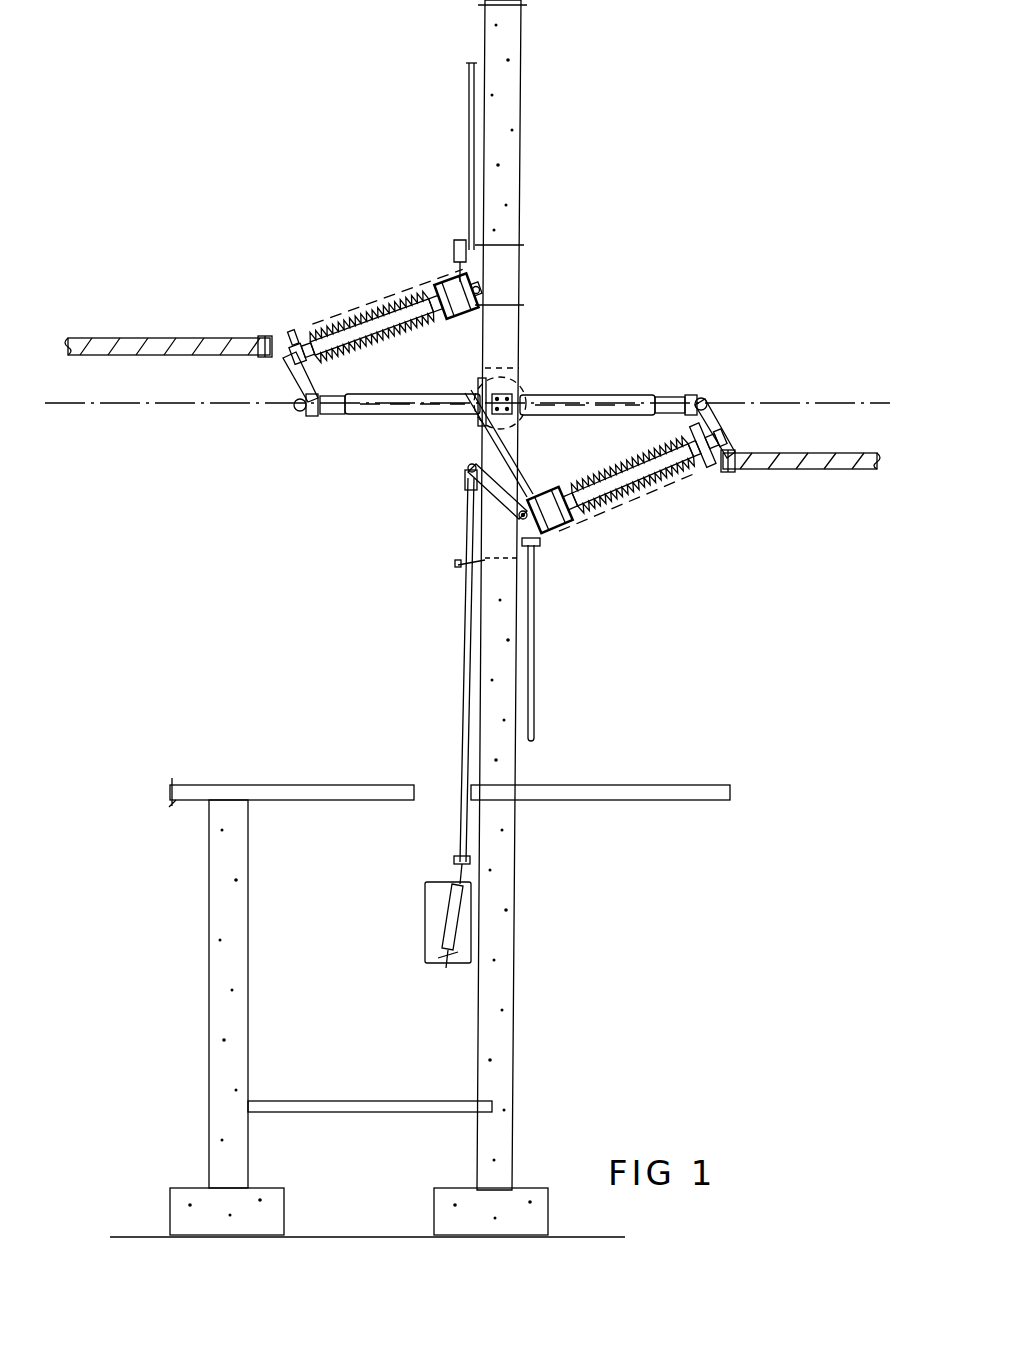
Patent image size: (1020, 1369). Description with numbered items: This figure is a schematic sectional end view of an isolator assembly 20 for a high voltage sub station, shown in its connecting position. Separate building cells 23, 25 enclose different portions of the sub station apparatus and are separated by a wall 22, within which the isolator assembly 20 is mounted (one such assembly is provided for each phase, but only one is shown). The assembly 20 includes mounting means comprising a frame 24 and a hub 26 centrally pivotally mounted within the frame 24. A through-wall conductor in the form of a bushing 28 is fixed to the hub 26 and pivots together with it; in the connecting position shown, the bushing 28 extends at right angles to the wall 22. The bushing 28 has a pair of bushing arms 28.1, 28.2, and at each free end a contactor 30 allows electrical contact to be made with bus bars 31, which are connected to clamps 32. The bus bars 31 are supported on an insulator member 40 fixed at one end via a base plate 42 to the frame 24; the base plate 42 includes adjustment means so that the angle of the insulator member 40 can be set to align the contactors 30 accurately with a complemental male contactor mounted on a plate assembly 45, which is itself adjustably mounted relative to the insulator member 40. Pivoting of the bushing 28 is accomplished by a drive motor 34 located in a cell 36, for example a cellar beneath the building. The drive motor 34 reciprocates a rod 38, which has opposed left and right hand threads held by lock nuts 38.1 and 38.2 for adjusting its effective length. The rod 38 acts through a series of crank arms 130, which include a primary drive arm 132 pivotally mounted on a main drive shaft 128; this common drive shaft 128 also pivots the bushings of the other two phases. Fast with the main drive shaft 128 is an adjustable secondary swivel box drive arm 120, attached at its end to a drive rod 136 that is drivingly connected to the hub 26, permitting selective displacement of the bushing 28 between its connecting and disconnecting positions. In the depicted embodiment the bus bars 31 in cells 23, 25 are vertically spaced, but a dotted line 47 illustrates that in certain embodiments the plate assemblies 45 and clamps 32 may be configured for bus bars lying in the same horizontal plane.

The isolator assembly 20 is at (226, 242).
The wall 22 is at (506, 190).
The building cell 23 is at (208, 47).
The frame 24 is at (508, 282).
The building cell 25 is at (710, 60).
The hub 26 is at (532, 385).
The bushing 28 is at (501, 437).
The bushing arm 28.1 is at (441, 412).
The bushing arm 28.2 is at (592, 416).
The contactor 30 is at (308, 425).
The bus bar 31 is at (178, 340).
The clamp 32 is at (276, 342).
The drive motor 34 is at (437, 913).
The cell 36 is at (400, 1042).
The rod 38 is at (418, 677).
The lock nut 38.1 is at (454, 860).
The lock nut 38.2 is at (458, 527).
The insulator member 40 is at (389, 272).
The base plate 42 is at (455, 320).
The plate assembly 45 is at (290, 365).
The dotted line 47 is at (185, 412).
The adjustable secondary swivel box drive arm 120 is at (596, 496).
The main drive shaft 128 is at (531, 548).
The crank arms 130 is at (460, 548).
The primary drive arm 132 is at (470, 483).
The drive rod 136 is at (472, 468).